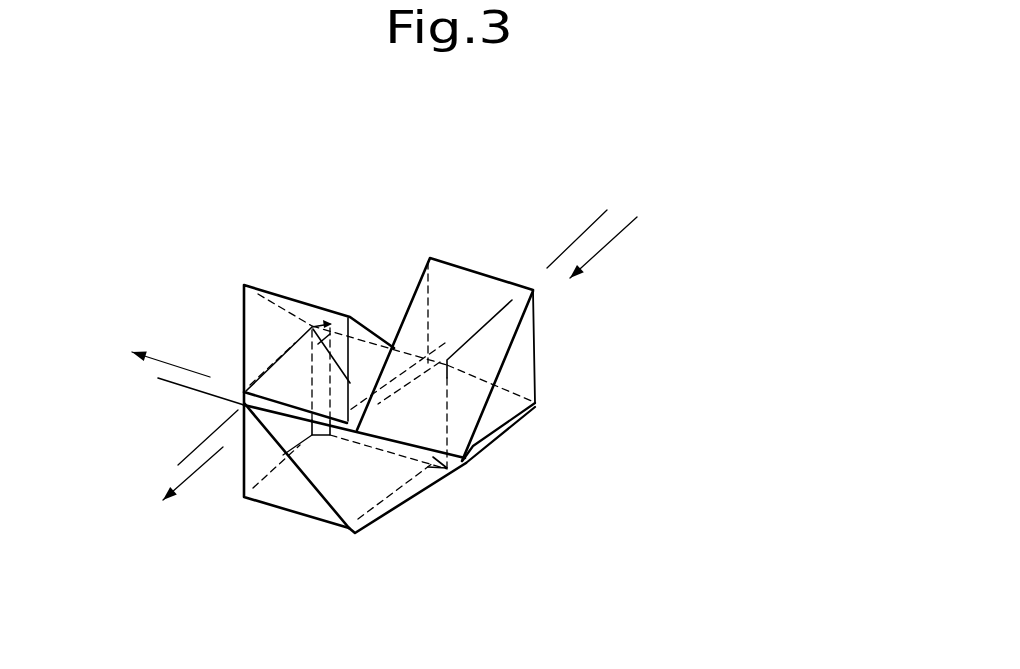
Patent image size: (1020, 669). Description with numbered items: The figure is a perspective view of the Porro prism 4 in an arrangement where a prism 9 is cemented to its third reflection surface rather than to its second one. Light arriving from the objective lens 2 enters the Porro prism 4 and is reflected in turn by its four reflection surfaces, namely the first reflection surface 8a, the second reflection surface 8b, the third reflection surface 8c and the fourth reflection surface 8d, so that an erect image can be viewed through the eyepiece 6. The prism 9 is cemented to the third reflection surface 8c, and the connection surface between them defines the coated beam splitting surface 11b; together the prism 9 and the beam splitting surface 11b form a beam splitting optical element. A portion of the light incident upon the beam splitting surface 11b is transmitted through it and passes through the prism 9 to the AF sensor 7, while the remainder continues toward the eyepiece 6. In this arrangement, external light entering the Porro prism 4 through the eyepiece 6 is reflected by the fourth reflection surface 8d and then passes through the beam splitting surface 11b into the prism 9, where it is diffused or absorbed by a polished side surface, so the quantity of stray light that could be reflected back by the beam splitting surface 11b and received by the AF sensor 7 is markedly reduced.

The Porro prism 4 is at (354, 278).
The first reflection surface 8a is at (455, 290).
The second reflection surface 8b is at (440, 481).
The third reflection surface 8c is at (323, 523).
The fourth reflection surface 8d is at (300, 300).
The prism 9 is at (264, 500).
The beam splitting surface 11b is at (284, 452).
The objective lens 2 is at (716, 253).
The eyepiece 6 is at (163, 474).
The AF sensor 7 is at (130, 341).